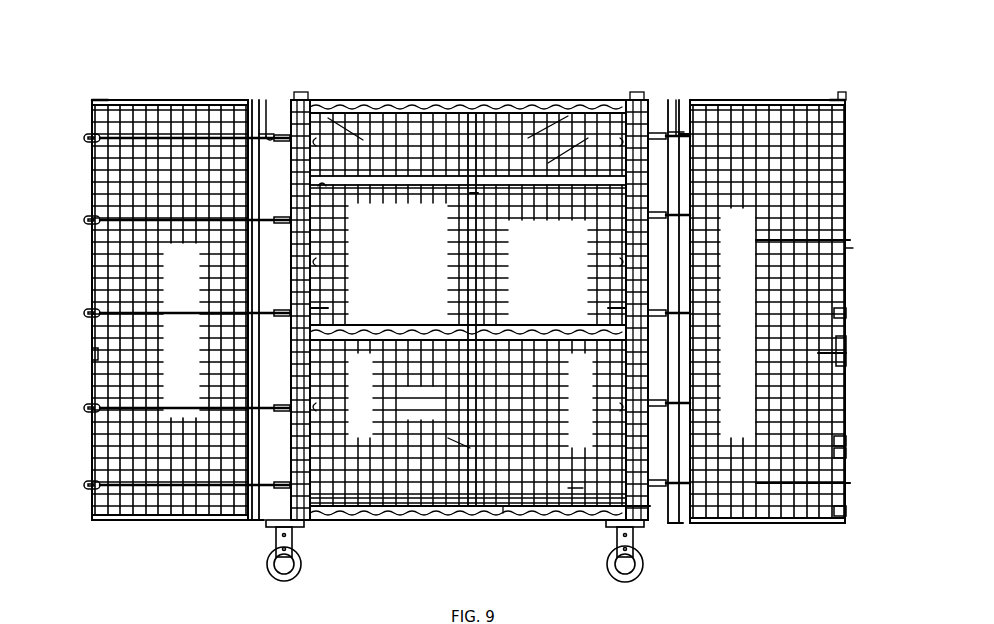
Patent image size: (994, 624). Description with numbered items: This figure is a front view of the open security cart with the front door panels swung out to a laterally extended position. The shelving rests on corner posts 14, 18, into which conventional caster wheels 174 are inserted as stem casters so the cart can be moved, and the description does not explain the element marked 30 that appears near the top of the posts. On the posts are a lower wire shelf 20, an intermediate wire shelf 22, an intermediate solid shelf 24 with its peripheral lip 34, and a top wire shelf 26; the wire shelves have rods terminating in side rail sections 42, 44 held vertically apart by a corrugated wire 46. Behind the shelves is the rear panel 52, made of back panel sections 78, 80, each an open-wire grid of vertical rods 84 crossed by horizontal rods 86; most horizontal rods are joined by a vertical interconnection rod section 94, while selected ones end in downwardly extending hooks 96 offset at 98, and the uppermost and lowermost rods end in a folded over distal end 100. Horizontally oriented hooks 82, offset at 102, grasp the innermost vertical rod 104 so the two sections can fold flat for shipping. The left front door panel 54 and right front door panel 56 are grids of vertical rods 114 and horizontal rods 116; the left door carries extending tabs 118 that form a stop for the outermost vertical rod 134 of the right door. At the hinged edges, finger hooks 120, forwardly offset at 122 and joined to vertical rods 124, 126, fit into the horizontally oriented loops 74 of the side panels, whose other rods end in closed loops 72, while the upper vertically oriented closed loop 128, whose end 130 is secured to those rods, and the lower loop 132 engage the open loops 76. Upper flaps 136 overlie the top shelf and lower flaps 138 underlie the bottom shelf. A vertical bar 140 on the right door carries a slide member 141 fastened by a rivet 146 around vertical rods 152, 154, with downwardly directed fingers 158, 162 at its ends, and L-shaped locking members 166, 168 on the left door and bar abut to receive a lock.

The corner post 14 is at (308, 500).
The corner post 18 is at (642, 505).
The lower wire shelf 20 is at (460, 514).
The intermediate wire shelf 22 is at (512, 316).
The intermediate solid shelf 24 is at (468, 223).
The top wire shelf 26 is at (518, 115).
The corner post 30 is at (298, 92).
The peripheral lip 34 is at (527, 176).
The side rail section 42 is at (455, 98).
The side rail section 44 is at (372, 97).
The corrugated wire 46 is at (420, 98).
The rear panel 52 is at (560, 490).
The left front door panel 54 is at (108, 518).
The right front door panel 56 is at (787, 513).
The horizontally oriented closed loop 72 is at (308, 300).
The horizontally oriented loop 74 is at (280, 232).
The open loop 76 is at (270, 125).
The back panel section 78 is at (440, 490).
The back panel section 80 is at (560, 480).
The horizontally oriented hook 82 is at (490, 95).
The vertical rod 84 is at (560, 125).
The horizontal rod 86 is at (543, 133).
The vertical interconnection rod section 94 is at (318, 180).
The downwardly extending hook 96 is at (355, 305).
The offset 98 is at (350, 295).
The folded over distal end 100 is at (332, 98).
The offset 102 is at (395, 220).
The innermost vertical rod 104 is at (500, 505).
The vertical rod 114 is at (175, 95).
The horizontal rod 116 is at (105, 98).
The extending tab 118 is at (78, 128).
The finger hook 120 is at (282, 250).
The forward offset 122 is at (210, 95).
The vertical rod 124 is at (267, 120).
The vertical rod 126 is at (700, 125).
The vertically oriented closed loop 128 is at (260, 122).
The loop end 130 is at (246, 126).
The vertically oriented loop 132 is at (252, 512).
The outermost vertical rod 134 is at (840, 250).
The inwardly bent upper flap 136 is at (88, 92).
The lower flap 138 is at (152, 514).
The vertical bar 140 is at (838, 335).
The slide member 141 is at (835, 235).
The rivet 146 is at (838, 346).
The vertical rod 152 is at (838, 446).
The vertical rod 154 is at (838, 432).
The downwardly directed finger 158 is at (840, 86).
The downwardly directed finger 162 is at (840, 500).
The L-shaped locking member 166 is at (86, 347).
The L-shaped locking member 168 is at (835, 320).
The caster wheel 174 is at (255, 557).